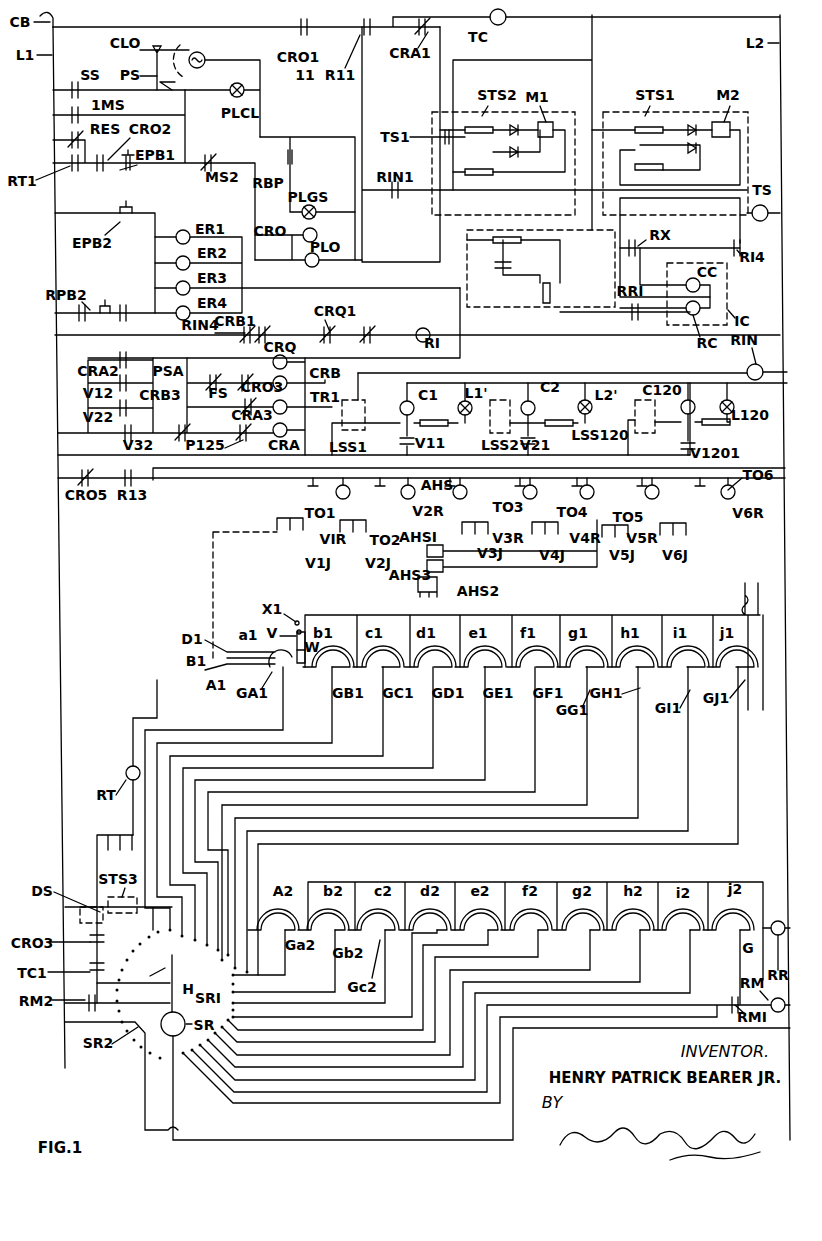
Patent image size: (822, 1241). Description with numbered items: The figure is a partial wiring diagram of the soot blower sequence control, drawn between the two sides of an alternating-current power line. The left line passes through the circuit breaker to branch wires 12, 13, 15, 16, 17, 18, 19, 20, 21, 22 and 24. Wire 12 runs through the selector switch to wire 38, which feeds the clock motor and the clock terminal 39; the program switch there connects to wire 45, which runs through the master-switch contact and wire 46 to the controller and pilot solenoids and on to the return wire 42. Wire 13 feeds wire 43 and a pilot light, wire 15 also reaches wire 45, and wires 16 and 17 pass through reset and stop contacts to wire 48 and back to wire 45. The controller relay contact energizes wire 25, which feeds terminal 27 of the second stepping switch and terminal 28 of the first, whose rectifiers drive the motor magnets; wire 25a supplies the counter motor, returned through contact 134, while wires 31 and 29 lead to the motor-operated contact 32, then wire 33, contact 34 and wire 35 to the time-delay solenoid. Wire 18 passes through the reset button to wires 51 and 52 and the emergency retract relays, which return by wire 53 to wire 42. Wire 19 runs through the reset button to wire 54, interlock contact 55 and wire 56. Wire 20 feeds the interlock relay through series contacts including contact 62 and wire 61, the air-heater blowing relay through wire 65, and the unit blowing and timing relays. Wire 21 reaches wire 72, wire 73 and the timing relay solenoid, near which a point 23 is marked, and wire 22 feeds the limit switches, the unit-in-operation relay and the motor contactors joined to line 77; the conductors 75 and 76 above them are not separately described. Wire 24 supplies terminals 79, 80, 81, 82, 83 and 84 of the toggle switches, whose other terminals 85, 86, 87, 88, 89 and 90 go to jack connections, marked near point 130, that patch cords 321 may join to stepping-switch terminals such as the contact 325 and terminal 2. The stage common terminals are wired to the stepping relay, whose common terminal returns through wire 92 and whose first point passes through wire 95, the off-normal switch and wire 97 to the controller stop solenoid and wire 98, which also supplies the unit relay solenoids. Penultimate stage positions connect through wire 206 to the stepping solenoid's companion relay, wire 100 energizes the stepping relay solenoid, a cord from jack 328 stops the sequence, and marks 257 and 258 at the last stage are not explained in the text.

The wire 12 is at (66, 88).
The wire 15 is at (52, 112).
The wire 16 is at (52, 138).
The wire 17 is at (52, 162).
The wire 18 is at (68, 212).
The wire 38 is at (128, 92).
The terminal on the clock 39 is at (182, 92).
The wire 45 is at (186, 140).
The wire 13 is at (288, 157).
The wire 43 is at (292, 190).
The wire 25 is at (322, 30).
The wire 31 is at (438, 78).
The motor operated contact 32 is at (548, 195).
The terminal on stepping switch STS1 28 is at (620, 165).
The contact on stepping switch STS1 134 is at (700, 198).
The terminal on stepping switch STS2 27 is at (438, 198).
The wire 29 is at (470, 212).
The wire 25a is at (365, 250).
The wire 42 is at (497, 300).
The wire 33 is at (614, 212).
The contact on stepping switch STS1 34 is at (712, 208).
The wire 35 is at (740, 210).
The wire 48 is at (108, 212).
The wire 51 is at (136, 210).
The wire 56 is at (106, 300).
The wire 52 is at (152, 262).
The wire 19 is at (61, 321).
The wire 54 is at (86, 319).
The interlock contact 55 is at (121, 319).
The wire 20 is at (417, 346).
The wire 65 is at (250, 330).
The wire 61 is at (390, 335).
The interlock contact 62 is at (370, 330).
The wire 53 is at (280, 288).
The wire 46 is at (255, 262).
The wire 21 is at (373, 406).
The wire 22 is at (72, 433).
The wire 72 is at (178, 430).
The wire 73 is at (235, 430).
The line 23 is at (307, 435).
The line 75 is at (585, 372).
The line 77 is at (695, 383).
The line 76 is at (785, 385).
The wire 24 is at (420, 497).
The toggle switch terminal 79 is at (299, 489).
The toggle switch terminal 80 is at (362, 489).
The toggle switch terminal 81 is at (477, 489).
The toggle switch terminal 82 is at (547, 489).
The toggle switch terminal 83 is at (603, 489).
The toggle switch terminal 84 is at (670, 489).
The single terminal of toggle switch 85 is at (280, 518).
The single terminal of toggle switch 86 is at (360, 522).
The single terminal of toggle switch 87 is at (440, 540).
The single terminal of toggle switch 88 is at (520, 522).
The single terminal of toggle switch 89 is at (615, 517).
The single terminal of toggle switch 90 is at (682, 498).
The line 130 is at (491, 558).
The patch cords 321 is at (213, 600).
The contact 325 is at (268, 660).
The terminal on stepping relay SR 2 is at (292, 659).
The wire 98 is at (132, 718).
The line 257 is at (740, 583).
The line 258 is at (760, 583).
The wire 206 is at (748, 700).
The jack 328 is at (108, 845).
The wire 97 is at (111, 916).
The wire 95 is at (142, 911).
The wire 92 is at (135, 995).
The wire 100 is at (408, 1141).